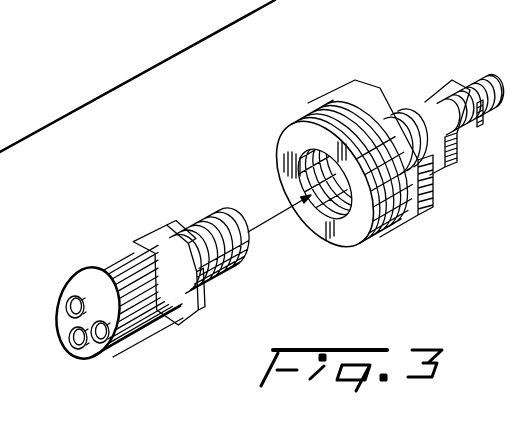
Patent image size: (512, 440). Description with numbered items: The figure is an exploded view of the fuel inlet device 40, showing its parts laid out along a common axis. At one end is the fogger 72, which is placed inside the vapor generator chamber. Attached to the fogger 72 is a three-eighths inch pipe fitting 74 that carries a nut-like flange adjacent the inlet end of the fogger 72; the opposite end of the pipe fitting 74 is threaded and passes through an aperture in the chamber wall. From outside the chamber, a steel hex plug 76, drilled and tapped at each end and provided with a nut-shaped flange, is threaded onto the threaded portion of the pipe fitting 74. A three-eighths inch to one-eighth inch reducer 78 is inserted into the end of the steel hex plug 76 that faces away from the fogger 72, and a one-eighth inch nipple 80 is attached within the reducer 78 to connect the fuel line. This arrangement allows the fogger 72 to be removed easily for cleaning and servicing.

The fuel inlet device 40 is at (413, 244).
The fogger 72 is at (107, 265).
The pipe fitting 74 is at (181, 226).
The steel hex plug 76 is at (328, 95).
The reducer 78 is at (400, 85).
The nipple 80 is at (462, 77).